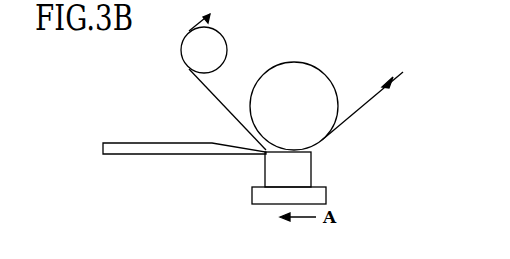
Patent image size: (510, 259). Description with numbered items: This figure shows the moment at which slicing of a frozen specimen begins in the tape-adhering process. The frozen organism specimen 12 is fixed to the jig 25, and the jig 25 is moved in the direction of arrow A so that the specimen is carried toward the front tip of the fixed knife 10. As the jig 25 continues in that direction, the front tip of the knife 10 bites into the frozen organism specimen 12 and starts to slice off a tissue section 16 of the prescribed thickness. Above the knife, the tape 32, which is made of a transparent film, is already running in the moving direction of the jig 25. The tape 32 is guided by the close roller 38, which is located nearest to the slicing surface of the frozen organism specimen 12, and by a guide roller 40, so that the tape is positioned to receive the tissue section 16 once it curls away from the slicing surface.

The knife 10 is at (116, 150).
The frozen organism specimen 12 is at (302, 163).
The tissue section 16 is at (255, 146).
The jig 25 is at (318, 197).
The tape 32 is at (373, 97).
The close roller 38 is at (316, 78).
The guide roller 40 is at (214, 46).